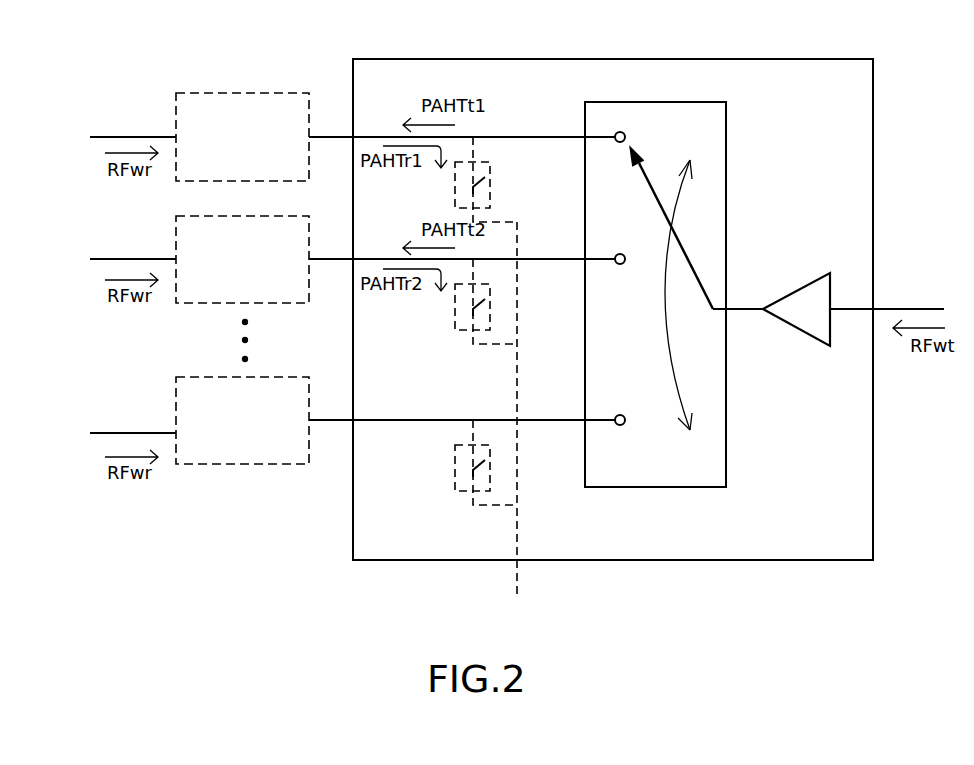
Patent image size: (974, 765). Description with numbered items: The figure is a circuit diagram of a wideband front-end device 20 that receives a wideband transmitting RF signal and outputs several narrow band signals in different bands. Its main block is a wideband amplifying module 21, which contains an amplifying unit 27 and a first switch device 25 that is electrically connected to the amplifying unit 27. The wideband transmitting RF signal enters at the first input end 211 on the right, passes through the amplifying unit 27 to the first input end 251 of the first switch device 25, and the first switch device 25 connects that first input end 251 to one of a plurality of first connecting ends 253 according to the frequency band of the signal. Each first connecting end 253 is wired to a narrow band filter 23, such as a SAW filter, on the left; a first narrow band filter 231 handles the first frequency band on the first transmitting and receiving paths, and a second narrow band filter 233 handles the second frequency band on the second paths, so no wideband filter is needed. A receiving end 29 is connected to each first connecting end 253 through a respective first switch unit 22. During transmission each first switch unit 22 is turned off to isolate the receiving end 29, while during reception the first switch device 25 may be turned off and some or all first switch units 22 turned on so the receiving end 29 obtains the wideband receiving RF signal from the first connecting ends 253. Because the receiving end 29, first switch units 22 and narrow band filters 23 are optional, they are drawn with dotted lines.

The wideband front-end device 20 is at (404, 26).
The wideband amplifying module 21 is at (731, 72).
The first input end 211 is at (920, 308).
The first switch unit 22 is at (455, 188).
The narrow band filter 23 is at (222, 78).
The first narrow band filter 231 is at (248, 103).
The second narrow band filter 233 is at (222, 295).
The first switch device 25 is at (720, 142).
The first input end of the first switch device 251 is at (737, 312).
The first connecting end 253 is at (533, 135).
The amplifying unit 27 is at (812, 290).
The receiving end 29 is at (514, 585).